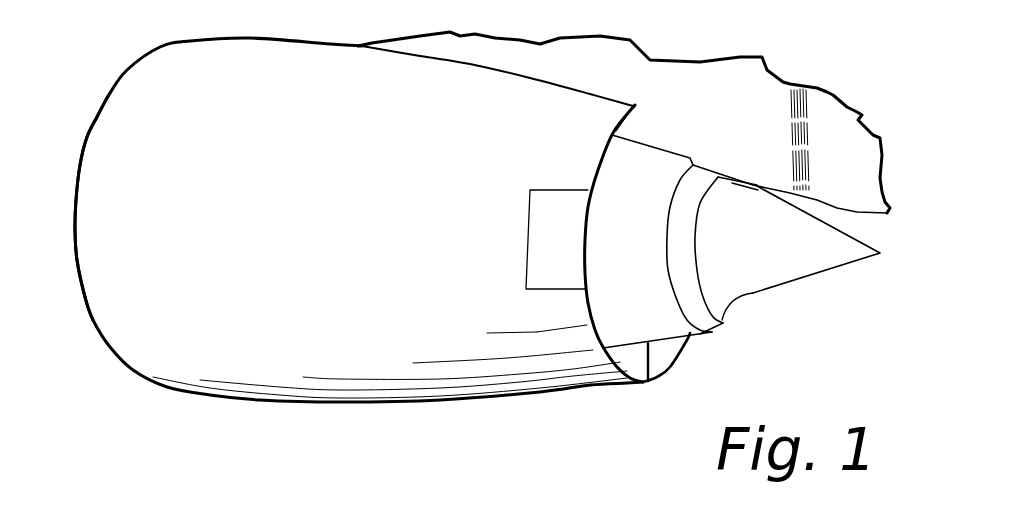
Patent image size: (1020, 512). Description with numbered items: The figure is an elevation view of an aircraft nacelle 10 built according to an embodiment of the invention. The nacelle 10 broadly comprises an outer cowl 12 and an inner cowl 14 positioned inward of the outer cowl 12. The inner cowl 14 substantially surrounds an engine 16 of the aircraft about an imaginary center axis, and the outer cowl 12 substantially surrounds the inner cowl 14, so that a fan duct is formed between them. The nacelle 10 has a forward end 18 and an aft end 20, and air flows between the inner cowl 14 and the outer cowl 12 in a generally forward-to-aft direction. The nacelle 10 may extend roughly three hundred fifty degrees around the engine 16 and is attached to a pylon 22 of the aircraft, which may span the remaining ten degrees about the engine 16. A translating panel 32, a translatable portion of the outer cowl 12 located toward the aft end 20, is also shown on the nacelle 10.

The aircraft nacelle 10 is at (437, 435).
The outer cowl 12 is at (255, 367).
The inner cowl 14 is at (682, 337).
The engine 16 is at (810, 268).
The forward end 18 is at (93, 320).
The aft end 20 is at (675, 367).
The pylon 22 is at (863, 157).
The translating panel 32 is at (523, 247).